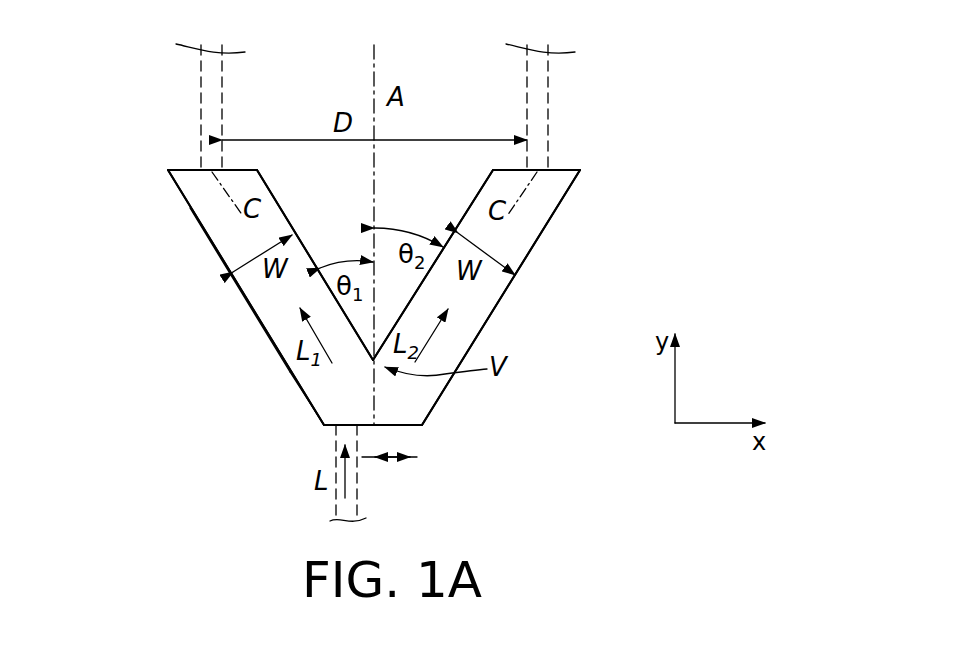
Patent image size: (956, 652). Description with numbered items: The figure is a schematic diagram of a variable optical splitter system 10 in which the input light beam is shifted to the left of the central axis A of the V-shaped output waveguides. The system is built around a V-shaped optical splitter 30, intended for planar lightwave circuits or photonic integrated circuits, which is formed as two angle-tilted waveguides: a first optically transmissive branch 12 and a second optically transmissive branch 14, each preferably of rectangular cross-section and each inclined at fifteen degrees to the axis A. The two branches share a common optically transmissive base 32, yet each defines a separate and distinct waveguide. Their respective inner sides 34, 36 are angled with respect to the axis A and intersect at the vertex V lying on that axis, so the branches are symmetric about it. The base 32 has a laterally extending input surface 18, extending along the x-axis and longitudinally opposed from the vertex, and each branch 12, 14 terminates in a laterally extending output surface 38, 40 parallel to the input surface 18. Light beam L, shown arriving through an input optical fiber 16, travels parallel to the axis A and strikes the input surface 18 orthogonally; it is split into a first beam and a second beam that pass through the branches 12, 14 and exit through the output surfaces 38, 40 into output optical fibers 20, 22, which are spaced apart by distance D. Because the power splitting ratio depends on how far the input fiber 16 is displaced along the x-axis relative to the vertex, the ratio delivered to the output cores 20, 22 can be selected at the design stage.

The variable optical splitter system 10 is at (790, 78).
The first optically transmissive branch 12 is at (177, 185).
The second optically transmissive branch 14 is at (569, 190).
The input optical fiber 16 is at (357, 474).
The laterally extending input surface 18 is at (398, 424).
The first output optical fiber 20 is at (222, 98).
The second output optical fiber 22 is at (548, 80).
The V-shaped optical splitter 30 is at (232, 322).
The optically transmissive base 32 is at (287, 394).
The inner side of first branch 34 is at (281, 210).
The inner side of second branch 36 is at (476, 197).
The first output surface 38 is at (199, 172).
The second output surface 40 is at (552, 172).